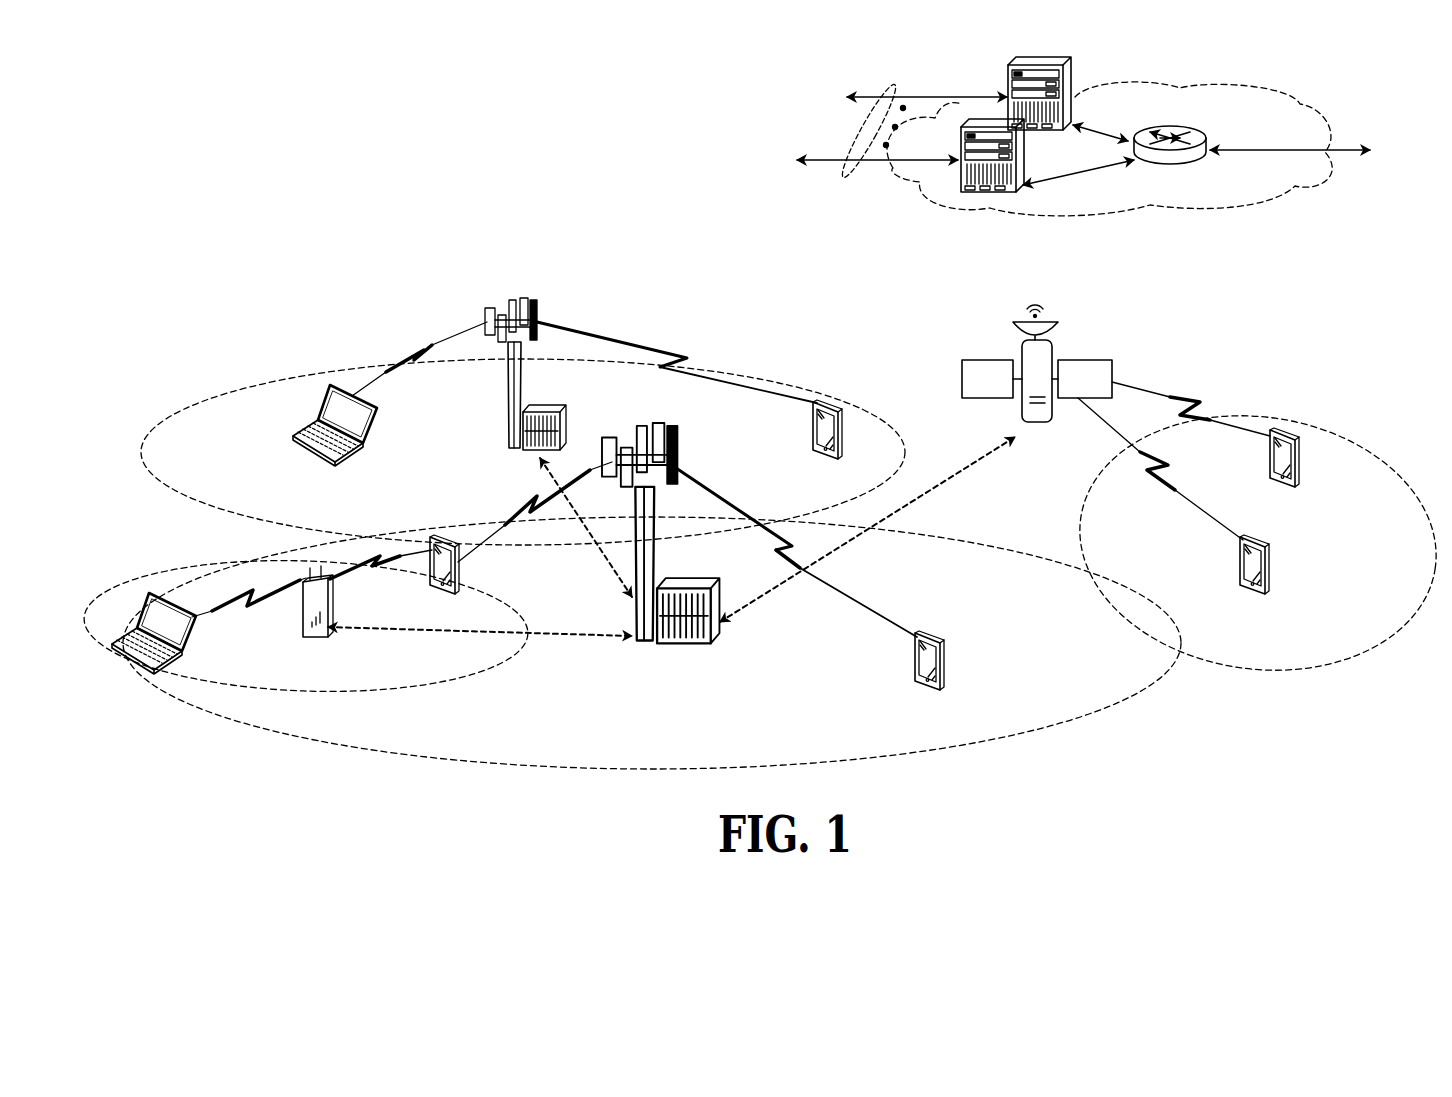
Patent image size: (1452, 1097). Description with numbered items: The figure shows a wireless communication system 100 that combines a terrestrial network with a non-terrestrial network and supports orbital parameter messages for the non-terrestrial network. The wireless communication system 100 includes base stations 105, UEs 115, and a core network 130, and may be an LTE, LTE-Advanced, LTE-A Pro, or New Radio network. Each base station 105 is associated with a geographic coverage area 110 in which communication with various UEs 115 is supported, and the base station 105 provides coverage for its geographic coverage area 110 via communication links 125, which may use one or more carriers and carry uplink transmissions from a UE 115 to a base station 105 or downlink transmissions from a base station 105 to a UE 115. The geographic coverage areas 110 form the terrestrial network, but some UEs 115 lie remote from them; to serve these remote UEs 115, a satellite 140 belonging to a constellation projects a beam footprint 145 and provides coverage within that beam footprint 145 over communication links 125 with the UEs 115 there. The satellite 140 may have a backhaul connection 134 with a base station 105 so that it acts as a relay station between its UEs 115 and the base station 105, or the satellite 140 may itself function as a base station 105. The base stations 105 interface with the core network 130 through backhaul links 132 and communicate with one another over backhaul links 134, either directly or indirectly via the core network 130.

The wireless communication system 100 is at (1318, 822).
The base station 105 is at (508, 435).
The geographic coverage area 110 is at (178, 492).
The UE 115 is at (318, 465).
The communication link 125 is at (410, 357).
The core network 130 is at (1135, 215).
The backhaul link 132 is at (848, 180).
The backhaul link 134 is at (582, 513).
The satellite 140 is at (958, 365).
The beam footprint 145 is at (1283, 670).